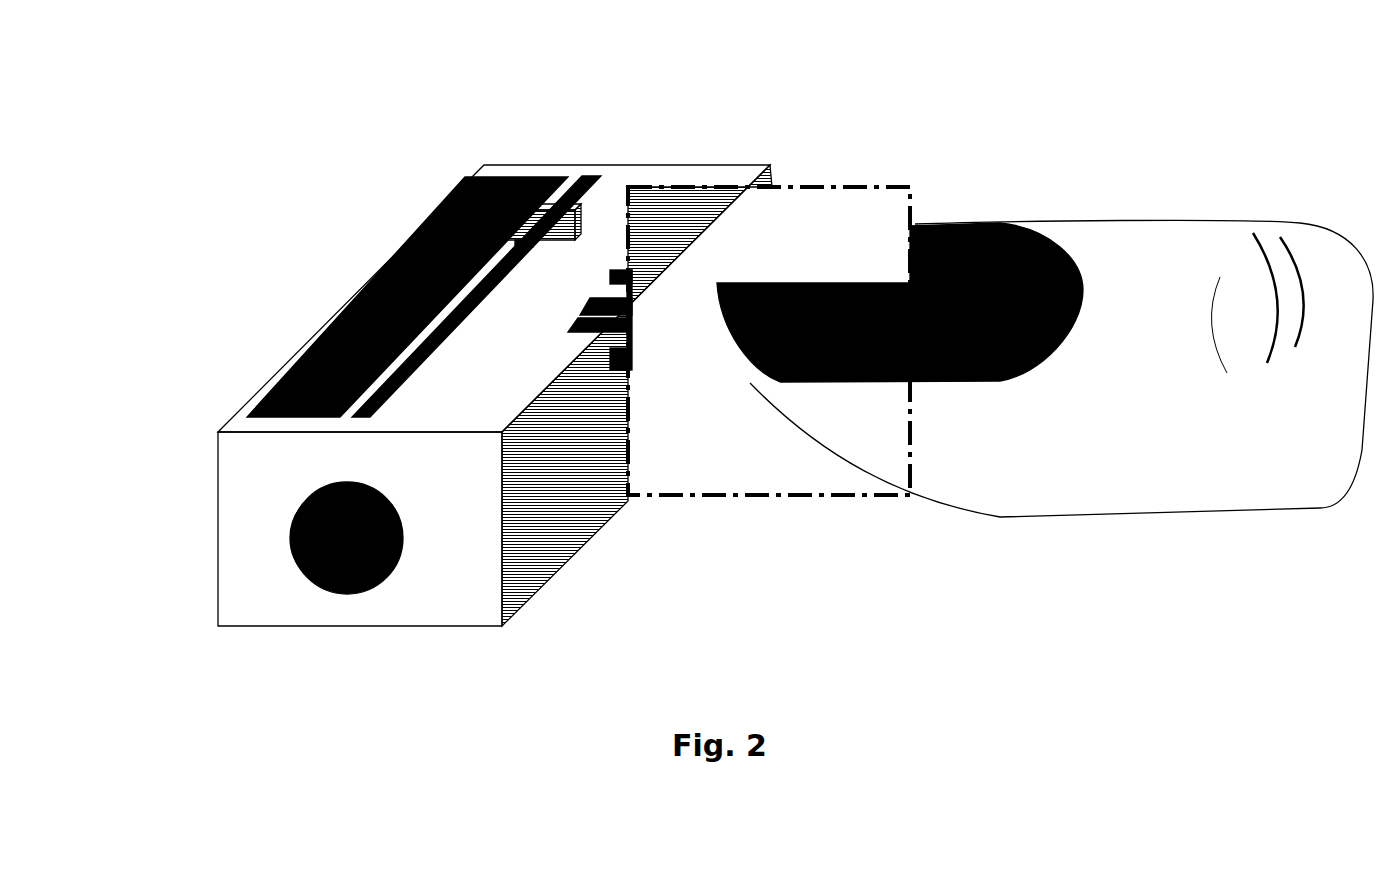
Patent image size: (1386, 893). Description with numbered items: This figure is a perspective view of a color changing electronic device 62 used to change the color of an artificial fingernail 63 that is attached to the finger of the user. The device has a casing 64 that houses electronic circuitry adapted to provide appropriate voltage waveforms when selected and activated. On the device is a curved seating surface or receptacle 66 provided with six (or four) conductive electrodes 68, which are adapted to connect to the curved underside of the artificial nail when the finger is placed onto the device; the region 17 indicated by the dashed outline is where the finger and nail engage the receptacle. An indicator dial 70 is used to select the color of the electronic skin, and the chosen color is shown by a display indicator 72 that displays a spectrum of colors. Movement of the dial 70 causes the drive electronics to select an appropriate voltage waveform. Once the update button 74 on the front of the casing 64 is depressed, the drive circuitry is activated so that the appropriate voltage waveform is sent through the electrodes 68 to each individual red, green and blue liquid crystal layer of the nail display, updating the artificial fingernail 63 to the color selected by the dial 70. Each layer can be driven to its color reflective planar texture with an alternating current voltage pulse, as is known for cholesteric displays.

The color changing electronic device 62 is at (633, 90).
The casing 64 is at (255, 555).
The curved seating surface or receptacle 66 is at (585, 296).
The conductive electrodes 68 is at (598, 324).
The indicator dial 70 is at (515, 225).
The display indicator 72 is at (370, 335).
The update button 74 is at (330, 530).
The finger sensing region 17 is at (865, 184).
The artificial fingernail 63 is at (945, 275).